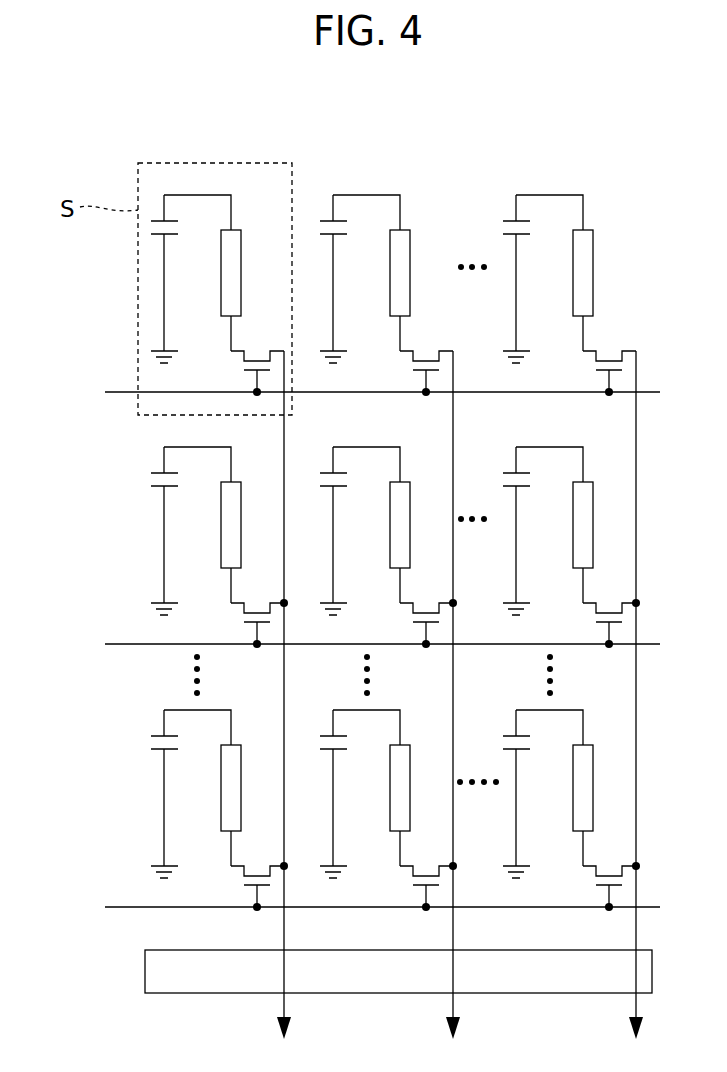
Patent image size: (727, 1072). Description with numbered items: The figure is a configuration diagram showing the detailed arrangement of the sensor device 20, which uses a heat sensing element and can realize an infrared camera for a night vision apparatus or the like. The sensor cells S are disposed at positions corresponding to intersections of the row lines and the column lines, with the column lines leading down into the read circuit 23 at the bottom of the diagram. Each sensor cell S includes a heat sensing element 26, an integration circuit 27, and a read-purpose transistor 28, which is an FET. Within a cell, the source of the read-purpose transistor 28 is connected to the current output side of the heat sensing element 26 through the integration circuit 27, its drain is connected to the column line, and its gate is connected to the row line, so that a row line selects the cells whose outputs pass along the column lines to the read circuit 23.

The sensor device 20 is at (617, 166).
The read circuit 23 is at (145, 974).
The heat sensing element 26 is at (352, 536).
The integration circuit 27 is at (395, 530).
The read-purpose transistor 28 is at (433, 603).